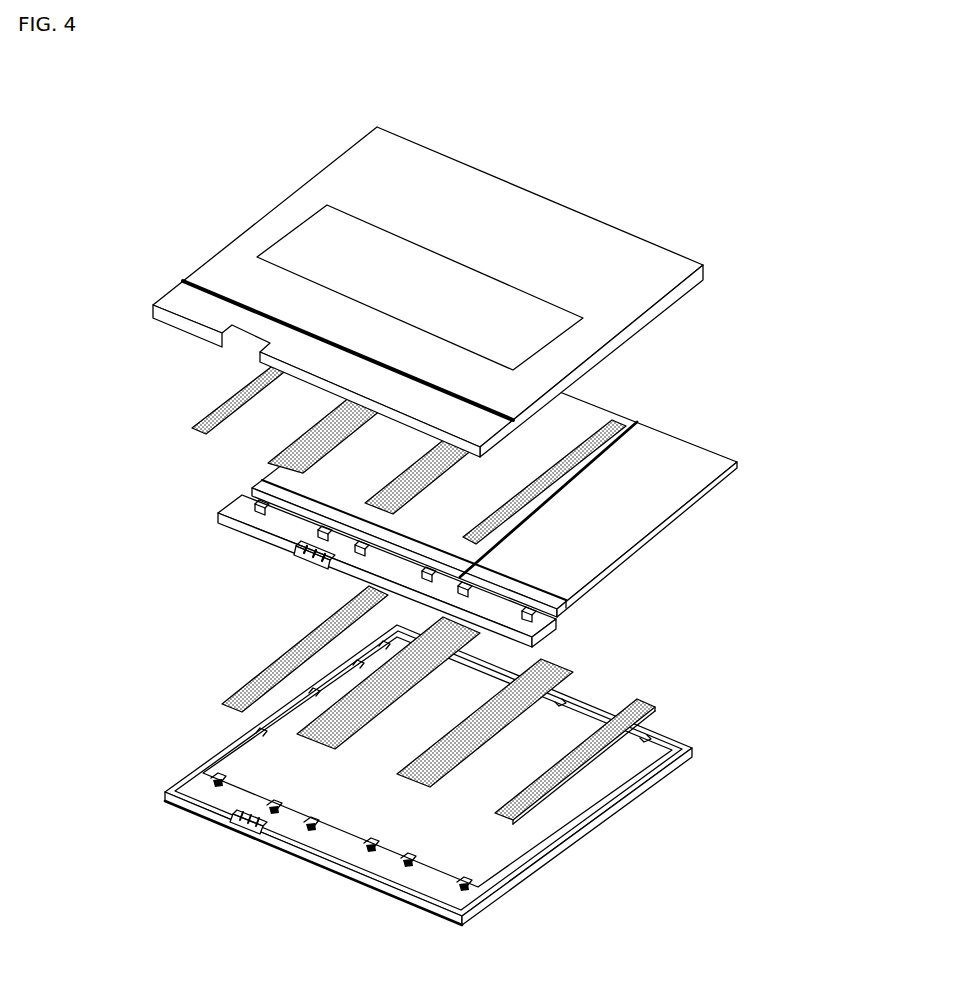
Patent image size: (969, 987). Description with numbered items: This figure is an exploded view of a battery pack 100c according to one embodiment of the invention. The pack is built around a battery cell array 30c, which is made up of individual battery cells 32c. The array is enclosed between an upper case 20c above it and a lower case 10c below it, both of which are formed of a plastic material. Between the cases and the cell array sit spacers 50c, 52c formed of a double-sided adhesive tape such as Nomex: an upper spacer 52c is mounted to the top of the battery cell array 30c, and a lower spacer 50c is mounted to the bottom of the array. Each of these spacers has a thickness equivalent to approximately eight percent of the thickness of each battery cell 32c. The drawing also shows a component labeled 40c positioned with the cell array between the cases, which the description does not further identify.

The battery pack 100c is at (189, 138).
The lower case 10c is at (698, 724).
The upper case 20c is at (668, 232).
The battery cell array 30c is at (570, 480).
The battery cell 32c is at (665, 437).
The bus bar strip with connector 40c is at (245, 566).
The lower spacer 50c is at (613, 652).
The upper spacer 52c is at (170, 441).